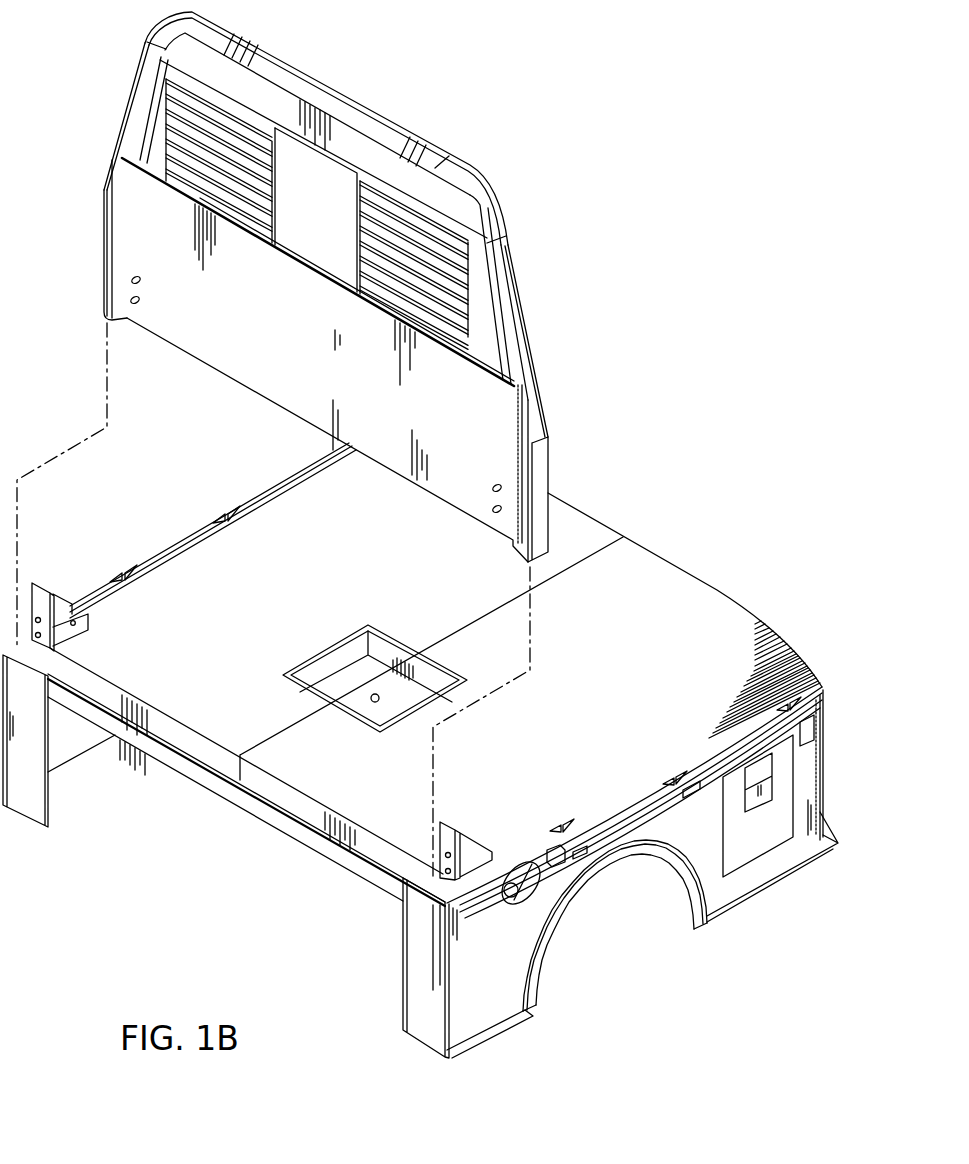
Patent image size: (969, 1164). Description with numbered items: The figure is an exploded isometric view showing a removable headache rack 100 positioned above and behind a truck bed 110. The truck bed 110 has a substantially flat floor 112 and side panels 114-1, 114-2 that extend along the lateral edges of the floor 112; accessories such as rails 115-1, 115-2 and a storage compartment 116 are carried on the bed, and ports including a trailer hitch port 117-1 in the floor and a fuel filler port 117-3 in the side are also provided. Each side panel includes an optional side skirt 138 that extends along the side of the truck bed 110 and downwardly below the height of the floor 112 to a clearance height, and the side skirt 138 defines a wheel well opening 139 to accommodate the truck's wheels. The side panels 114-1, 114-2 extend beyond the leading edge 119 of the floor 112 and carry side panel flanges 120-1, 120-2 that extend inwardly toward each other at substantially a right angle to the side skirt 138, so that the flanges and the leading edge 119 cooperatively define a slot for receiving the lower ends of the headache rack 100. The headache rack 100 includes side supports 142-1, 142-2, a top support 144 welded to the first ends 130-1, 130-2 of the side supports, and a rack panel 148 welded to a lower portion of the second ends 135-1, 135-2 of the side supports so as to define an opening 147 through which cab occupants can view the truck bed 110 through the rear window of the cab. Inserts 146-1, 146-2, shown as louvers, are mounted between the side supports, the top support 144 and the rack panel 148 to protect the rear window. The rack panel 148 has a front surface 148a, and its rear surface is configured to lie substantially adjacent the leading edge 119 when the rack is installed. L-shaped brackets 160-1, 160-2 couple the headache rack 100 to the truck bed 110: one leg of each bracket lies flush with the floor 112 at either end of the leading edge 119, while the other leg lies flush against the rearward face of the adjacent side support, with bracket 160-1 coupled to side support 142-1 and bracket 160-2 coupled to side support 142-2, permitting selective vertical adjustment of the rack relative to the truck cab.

The removable headache rack 100 is at (108, 147).
The truck bed 110 is at (700, 577).
The floor 112 is at (651, 686).
The first side panel 114-1 is at (477, 1023).
The second side panel 114-2 is at (73, 748).
The first rail 115-1 is at (647, 802).
The second rail 115-2 is at (127, 563).
The storage compartment 116 is at (762, 847).
The trailer hitch port 117-1 is at (353, 675).
The fuel filler port 117-3 is at (518, 890).
The leading edge 119 is at (227, 763).
The first side panel flange 120-1 is at (410, 992).
The second side panel flange 120-2 is at (28, 805).
The first end of first side support 130-1 is at (510, 263).
The first end of second side support 130-2 is at (143, 70).
The second end of first side support 135-1 is at (542, 427).
The second end of second side support 135-2 is at (103, 227).
The side skirt 138 is at (508, 991).
The wheel well opening 139 is at (621, 862).
The first side support 142-1 is at (518, 335).
The second side support 142-2 is at (135, 107).
The top support 144 is at (155, 34).
The first insert 146-1 is at (470, 315).
The second insert 146-2 is at (157, 158).
The opening 147 is at (337, 220).
The rack panel 148 is at (337, 360).
The front surface 148a is at (270, 387).
The first bracket 160-1 is at (483, 855).
The second bracket 160-2 is at (43, 603).